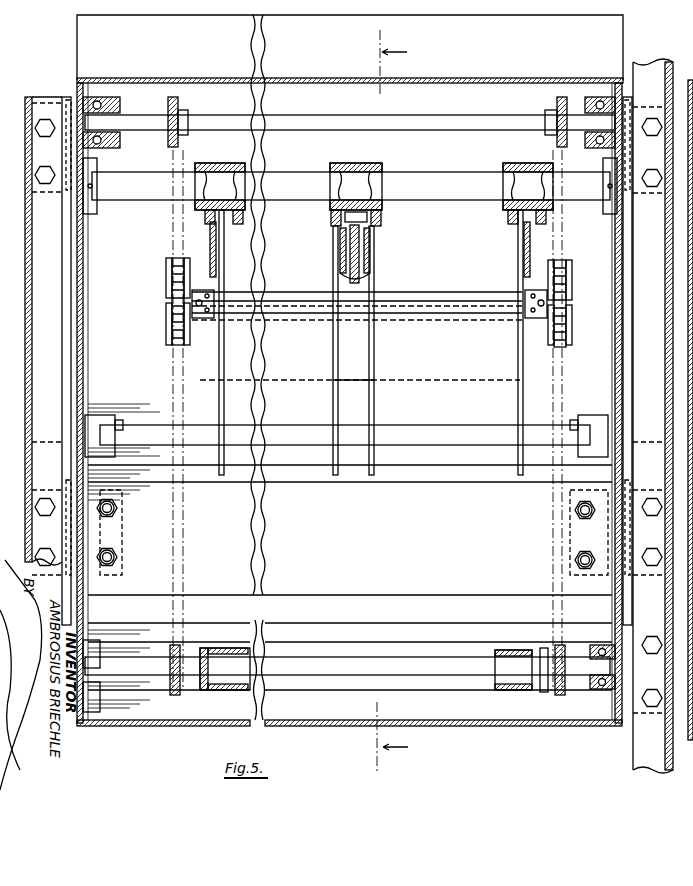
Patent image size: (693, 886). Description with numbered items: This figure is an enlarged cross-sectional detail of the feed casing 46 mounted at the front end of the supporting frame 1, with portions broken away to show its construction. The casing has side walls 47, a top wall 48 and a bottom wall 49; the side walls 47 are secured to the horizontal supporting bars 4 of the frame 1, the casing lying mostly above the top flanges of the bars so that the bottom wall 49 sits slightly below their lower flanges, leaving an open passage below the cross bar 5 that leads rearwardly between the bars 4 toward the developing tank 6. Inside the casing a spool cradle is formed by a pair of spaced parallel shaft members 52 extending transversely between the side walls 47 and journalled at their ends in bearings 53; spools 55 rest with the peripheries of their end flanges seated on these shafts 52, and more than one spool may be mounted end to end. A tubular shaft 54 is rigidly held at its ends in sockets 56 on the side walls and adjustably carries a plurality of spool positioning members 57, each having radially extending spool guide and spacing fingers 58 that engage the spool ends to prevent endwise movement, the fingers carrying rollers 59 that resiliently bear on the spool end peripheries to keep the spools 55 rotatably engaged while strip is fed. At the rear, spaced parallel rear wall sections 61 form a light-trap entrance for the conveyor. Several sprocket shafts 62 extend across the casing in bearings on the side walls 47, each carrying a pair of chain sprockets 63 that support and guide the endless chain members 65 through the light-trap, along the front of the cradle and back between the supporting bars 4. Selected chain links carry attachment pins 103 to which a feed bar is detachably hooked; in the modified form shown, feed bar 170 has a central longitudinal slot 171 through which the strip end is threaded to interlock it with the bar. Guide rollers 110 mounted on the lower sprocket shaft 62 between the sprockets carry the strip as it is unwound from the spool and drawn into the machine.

The channel upright 1 is at (25, 362).
The horizontal supporting bars 4 is at (50, 442).
The cross bar 5 is at (270, 596).
The developing tank 6 is at (392, 401).
The feed casing 46 is at (523, 75).
The side walls 47 is at (77, 310).
The top wall 48 is at (270, 80).
The bottom wall 49 is at (495, 725).
The shaft members 52 is at (470, 425).
The bearings 53 is at (100, 418).
The tubular shaft 54 is at (351, 186).
The spools 55 is at (333, 401).
The sockets 56 is at (97, 166).
The spool positioning members 57 is at (230, 157).
The spool guide and spacing fingers 58 is at (382, 276).
The rollers 59 is at (508, 217).
The rear wall sections 61 is at (267, 480).
The sprocket shafts 62 is at (350, 395).
The chain sprockets 63 is at (188, 110).
The endless chain members 65 is at (166, 284).
The attachment pins 103 is at (201, 312).
The guide rollers 110 is at (342, 640).
The feed bar 170 is at (313, 296).
The longitudinal slot 171 is at (352, 303).